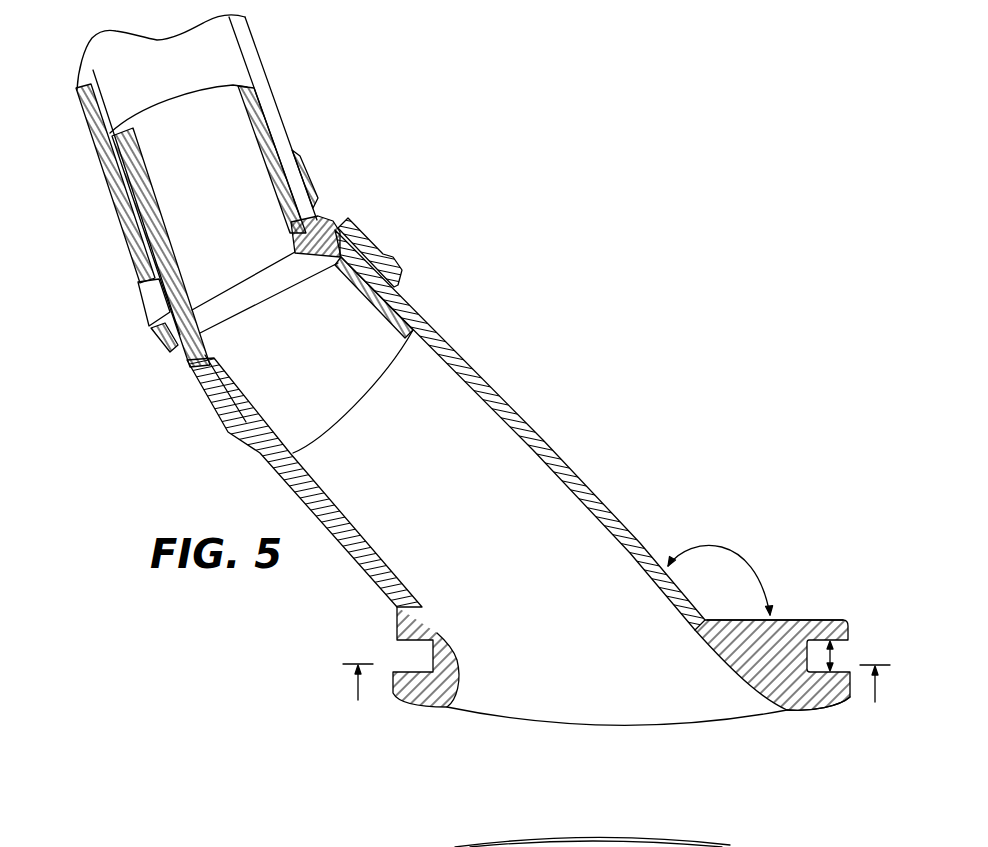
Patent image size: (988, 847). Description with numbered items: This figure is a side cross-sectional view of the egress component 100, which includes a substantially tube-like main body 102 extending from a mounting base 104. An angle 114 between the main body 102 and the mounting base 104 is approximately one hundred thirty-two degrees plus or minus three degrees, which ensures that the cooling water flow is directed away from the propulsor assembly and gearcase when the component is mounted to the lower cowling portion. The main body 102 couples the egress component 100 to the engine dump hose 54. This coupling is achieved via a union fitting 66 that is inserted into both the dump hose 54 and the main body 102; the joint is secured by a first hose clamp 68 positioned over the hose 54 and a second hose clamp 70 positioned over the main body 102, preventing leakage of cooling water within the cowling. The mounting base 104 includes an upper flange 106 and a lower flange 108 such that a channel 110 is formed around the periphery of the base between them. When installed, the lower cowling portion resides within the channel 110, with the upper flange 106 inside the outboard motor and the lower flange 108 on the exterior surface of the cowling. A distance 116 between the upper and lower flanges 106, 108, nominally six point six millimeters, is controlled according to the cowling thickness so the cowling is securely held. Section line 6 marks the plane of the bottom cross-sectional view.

The engine dump hose 54 is at (90, 121).
The union fitting 66 is at (168, 350).
The first hose clamp 68 is at (307, 172).
The second hose clamp 70 is at (368, 240).
The egress component 100 is at (670, 466).
The main body 102 is at (527, 423).
The mounting base 104 is at (865, 591).
The upper flange 106 is at (802, 619).
The lower flange 108 is at (820, 708).
The channel 110 is at (404, 657).
The angle 114 is at (727, 553).
The distance 116 is at (834, 657).
The section line 6- 6 is at (616, 699).